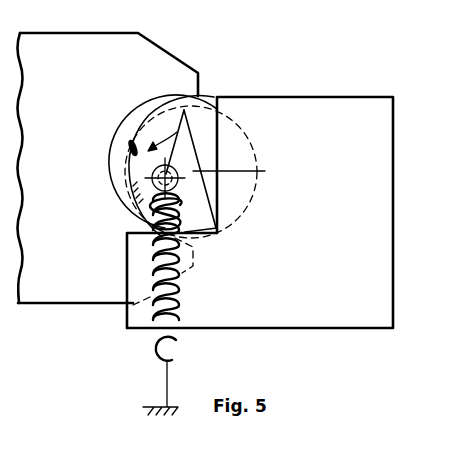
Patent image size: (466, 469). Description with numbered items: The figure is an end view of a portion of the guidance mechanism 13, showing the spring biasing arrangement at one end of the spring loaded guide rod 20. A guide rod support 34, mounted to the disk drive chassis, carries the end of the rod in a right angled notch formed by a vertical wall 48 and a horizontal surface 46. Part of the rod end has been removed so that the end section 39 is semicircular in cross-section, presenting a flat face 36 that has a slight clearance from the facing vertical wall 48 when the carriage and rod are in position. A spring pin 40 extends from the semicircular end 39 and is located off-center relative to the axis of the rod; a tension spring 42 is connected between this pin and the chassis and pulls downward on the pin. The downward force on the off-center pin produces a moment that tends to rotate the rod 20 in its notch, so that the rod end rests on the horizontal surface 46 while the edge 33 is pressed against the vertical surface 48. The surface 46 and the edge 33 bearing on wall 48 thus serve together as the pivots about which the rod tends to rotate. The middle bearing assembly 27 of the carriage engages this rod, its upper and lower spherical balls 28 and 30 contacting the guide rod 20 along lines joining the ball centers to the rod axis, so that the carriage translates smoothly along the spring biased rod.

The guidance mechanism 13 is at (94, 366).
The spring loaded guide rod 20 is at (207, 106).
The middle bearing assembly 27 is at (70, 30).
The upper spherical ball 28 is at (177, 105).
The lower spherical ball 30 is at (147, 206).
The edges 33 is at (200, 232).
The guide rod support 34 is at (310, 329).
The flat face 36 is at (265, 171).
The semicircular end section 39 is at (128, 163).
The spring pin 40 is at (213, 143).
The tension spring 42 is at (178, 338).
The horizontal surface 46 is at (146, 232).
The vertical wall 48 is at (225, 112).